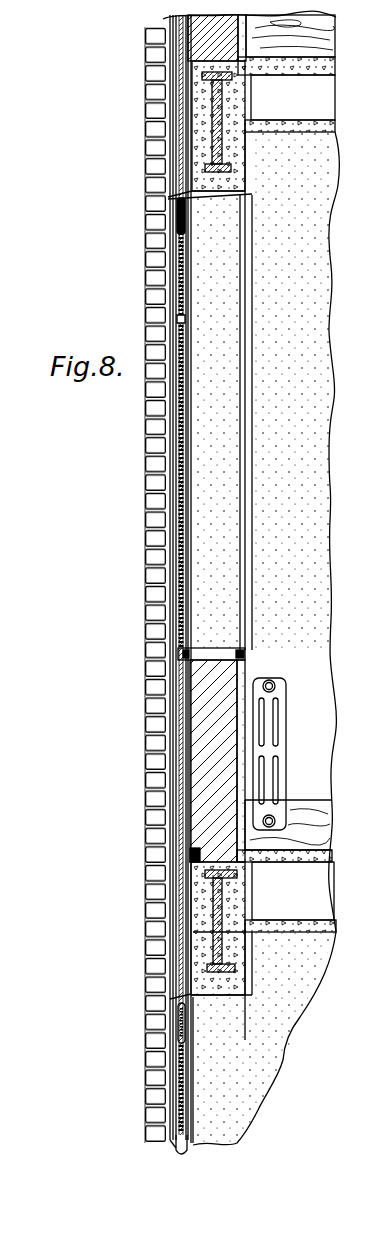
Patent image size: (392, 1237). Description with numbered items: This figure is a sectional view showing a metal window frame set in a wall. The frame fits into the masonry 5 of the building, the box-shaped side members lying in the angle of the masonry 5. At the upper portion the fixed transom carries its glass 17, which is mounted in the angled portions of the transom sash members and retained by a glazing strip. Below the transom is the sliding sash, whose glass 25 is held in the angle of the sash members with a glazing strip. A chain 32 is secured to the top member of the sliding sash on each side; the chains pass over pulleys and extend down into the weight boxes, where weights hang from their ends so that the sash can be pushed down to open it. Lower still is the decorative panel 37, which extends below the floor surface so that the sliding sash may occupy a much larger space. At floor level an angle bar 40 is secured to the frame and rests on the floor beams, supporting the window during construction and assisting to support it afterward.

The masonry 5 is at (147, 168).
The glass 17 is at (178, 232).
The glass 25 is at (183, 406).
The chain 32 is at (183, 270).
The decorative panel 37 is at (190, 722).
The angle bar 40 is at (195, 850).